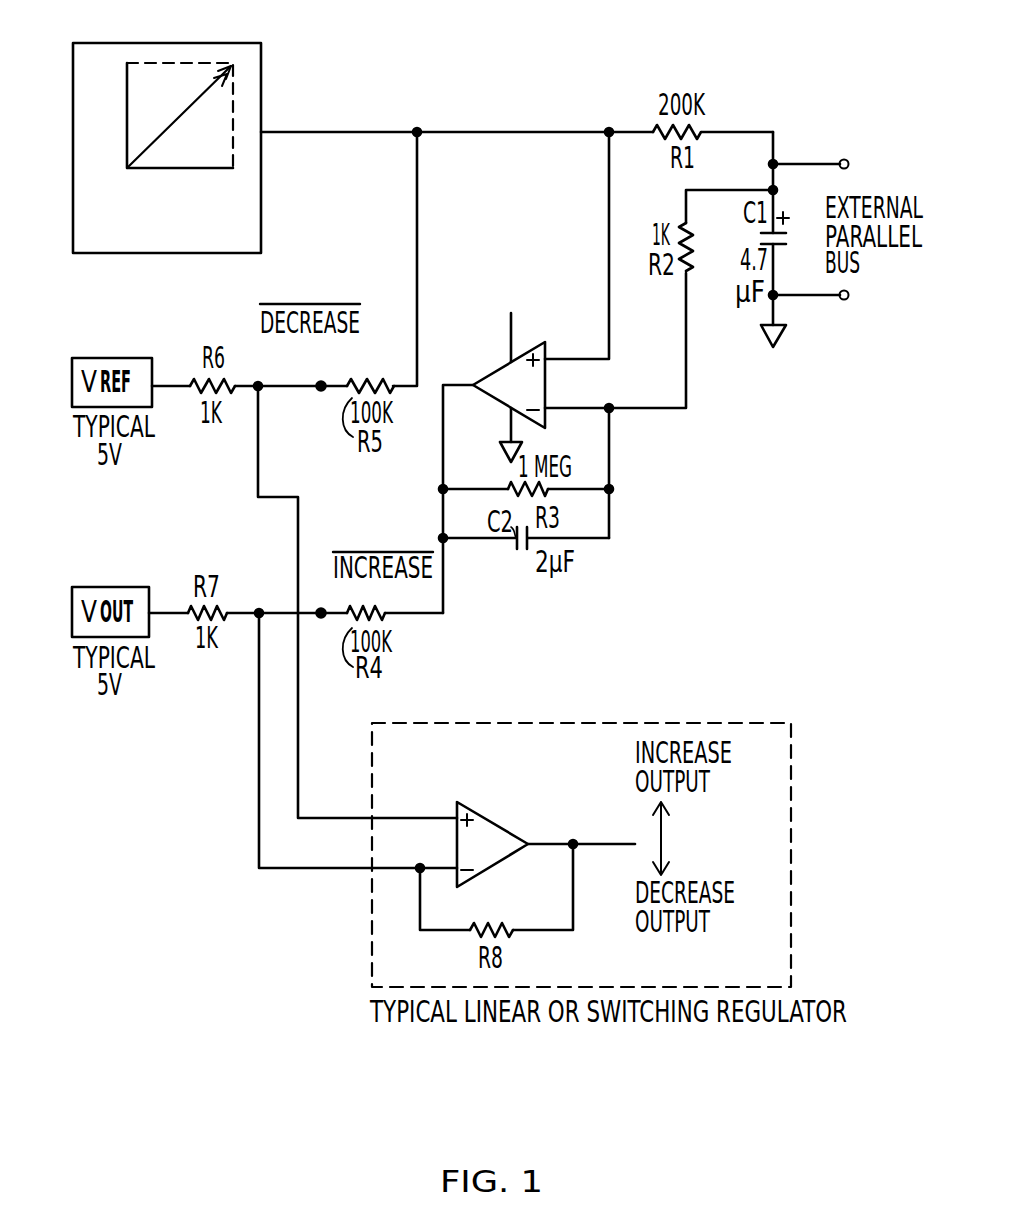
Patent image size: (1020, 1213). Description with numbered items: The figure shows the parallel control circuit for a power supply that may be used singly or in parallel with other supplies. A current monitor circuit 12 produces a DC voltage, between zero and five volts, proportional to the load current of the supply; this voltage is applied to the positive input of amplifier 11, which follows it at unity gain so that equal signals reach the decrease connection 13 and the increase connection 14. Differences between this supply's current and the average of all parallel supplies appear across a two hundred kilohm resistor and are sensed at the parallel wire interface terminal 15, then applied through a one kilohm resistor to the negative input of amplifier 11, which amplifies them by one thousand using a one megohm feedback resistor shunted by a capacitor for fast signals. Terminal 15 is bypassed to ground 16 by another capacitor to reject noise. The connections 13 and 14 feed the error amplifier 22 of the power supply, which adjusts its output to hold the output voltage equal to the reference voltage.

The current monitor circuit 12 is at (190, 43).
The amplifier 11 is at (474, 384).
The decrease connection 13 is at (321, 385).
The increase connection 14 is at (321, 612).
The parallel wire interface terminal 15 is at (842, 160).
The ground 16 is at (843, 299).
The error amplifier 22 is at (505, 827).